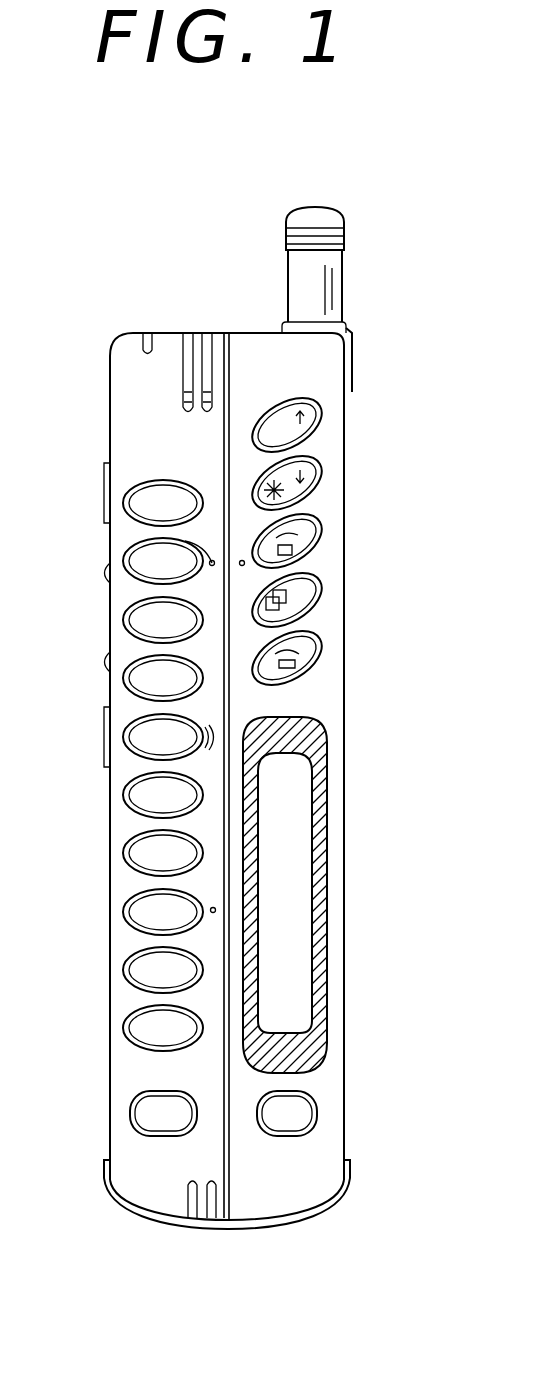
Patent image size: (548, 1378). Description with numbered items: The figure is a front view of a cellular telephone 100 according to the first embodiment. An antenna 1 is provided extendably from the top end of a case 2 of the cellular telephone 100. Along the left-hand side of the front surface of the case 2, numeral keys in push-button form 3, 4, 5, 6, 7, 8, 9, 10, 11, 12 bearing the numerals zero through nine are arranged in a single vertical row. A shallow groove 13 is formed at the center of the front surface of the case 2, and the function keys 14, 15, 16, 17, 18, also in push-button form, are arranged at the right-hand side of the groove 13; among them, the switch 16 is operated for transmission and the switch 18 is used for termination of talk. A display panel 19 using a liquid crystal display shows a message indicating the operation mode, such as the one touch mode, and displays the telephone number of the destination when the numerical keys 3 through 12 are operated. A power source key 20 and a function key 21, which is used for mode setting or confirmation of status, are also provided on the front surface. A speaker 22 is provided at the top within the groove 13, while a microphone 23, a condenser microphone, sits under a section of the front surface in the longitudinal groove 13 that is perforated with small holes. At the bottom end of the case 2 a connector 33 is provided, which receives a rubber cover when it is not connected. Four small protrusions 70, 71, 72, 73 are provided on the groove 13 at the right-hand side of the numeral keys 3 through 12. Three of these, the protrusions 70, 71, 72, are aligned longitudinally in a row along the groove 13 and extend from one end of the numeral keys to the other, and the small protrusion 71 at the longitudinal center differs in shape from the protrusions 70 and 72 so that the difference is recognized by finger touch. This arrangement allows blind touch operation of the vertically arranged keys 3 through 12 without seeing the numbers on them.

The cellular telephone 100 is at (113, 312).
The antenna 1 is at (332, 273).
The case 2 is at (130, 363).
The numeral key 3 is at (130, 497).
The numeral key 4 is at (135, 562).
The numeral key 5 is at (135, 620).
The numeral key 6 is at (135, 678).
The numeral key 7 is at (135, 737).
The numeral key 8 is at (135, 795).
The numeral key 9 is at (135, 853).
The numeral key 10 is at (135, 912).
The numeral key 11 is at (135, 970).
The numeral key 12 is at (135, 1028).
The groove 13 is at (238, 362).
The function key 14 is at (308, 414).
The function key 15 is at (308, 481).
The switch for transmission 16 is at (308, 539).
The function key 17 is at (308, 598).
The switch for termination of talk 18 is at (308, 656).
The display panel 19 is at (297, 880).
The power source key 20 is at (305, 1114).
The function key 21 is at (140, 1114).
The speaker 22 is at (183, 388).
The microphone 23 is at (231, 1173).
The connector 33 is at (225, 1230).
The small protrusion 70 is at (208, 533).
The small protrusion 71 is at (214, 740).
The small protrusion 72 is at (216, 912).
The small protrusion 73 is at (242, 560).